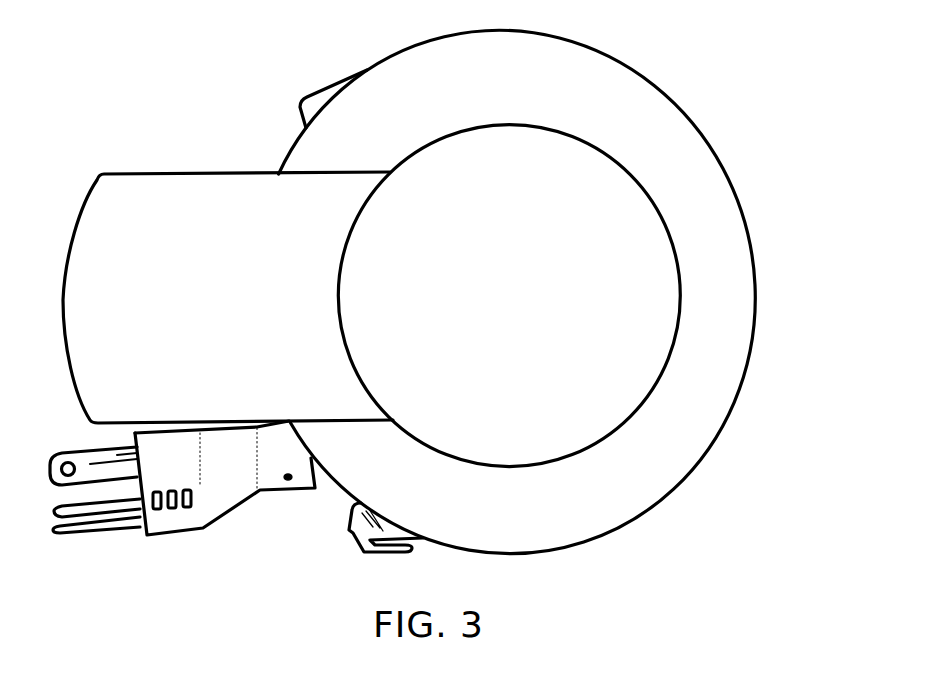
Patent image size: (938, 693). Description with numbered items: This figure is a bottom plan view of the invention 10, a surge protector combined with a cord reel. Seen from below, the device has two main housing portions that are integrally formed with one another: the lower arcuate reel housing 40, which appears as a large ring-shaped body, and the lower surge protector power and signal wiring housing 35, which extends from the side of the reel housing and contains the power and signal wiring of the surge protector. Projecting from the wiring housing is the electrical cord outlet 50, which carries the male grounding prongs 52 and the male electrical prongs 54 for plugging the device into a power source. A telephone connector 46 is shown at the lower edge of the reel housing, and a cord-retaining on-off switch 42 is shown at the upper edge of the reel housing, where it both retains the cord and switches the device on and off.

The invention 10 is at (187, 127).
The lower surge protector power and signal wiring housing 35 is at (212, 311).
The lower arcuate reel housing 40 is at (505, 306).
The cord-retaining on-off switch 42 is at (316, 93).
The telephone connector 46 is at (344, 529).
The electrical cord outlet 50 is at (248, 484).
The male grounding prongs 52 is at (54, 542).
The male electrical prongs 54 is at (47, 470).